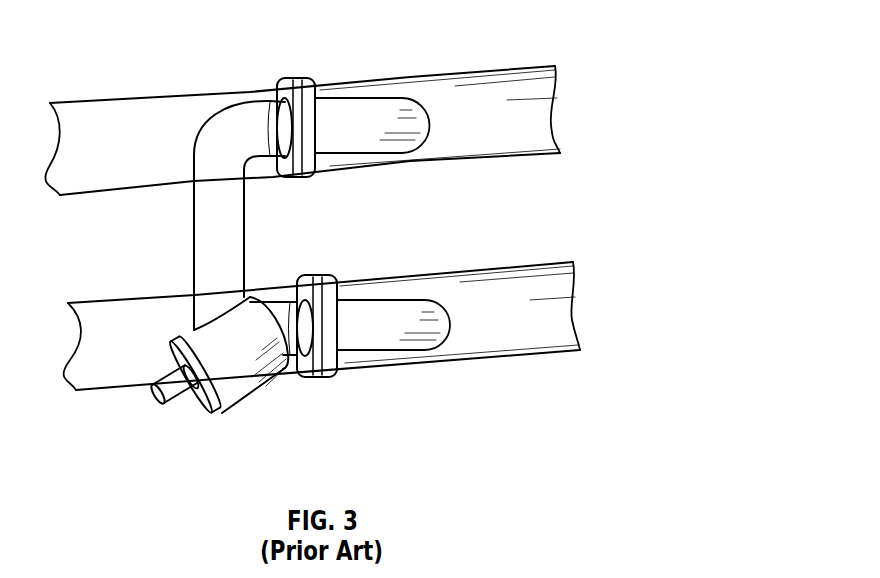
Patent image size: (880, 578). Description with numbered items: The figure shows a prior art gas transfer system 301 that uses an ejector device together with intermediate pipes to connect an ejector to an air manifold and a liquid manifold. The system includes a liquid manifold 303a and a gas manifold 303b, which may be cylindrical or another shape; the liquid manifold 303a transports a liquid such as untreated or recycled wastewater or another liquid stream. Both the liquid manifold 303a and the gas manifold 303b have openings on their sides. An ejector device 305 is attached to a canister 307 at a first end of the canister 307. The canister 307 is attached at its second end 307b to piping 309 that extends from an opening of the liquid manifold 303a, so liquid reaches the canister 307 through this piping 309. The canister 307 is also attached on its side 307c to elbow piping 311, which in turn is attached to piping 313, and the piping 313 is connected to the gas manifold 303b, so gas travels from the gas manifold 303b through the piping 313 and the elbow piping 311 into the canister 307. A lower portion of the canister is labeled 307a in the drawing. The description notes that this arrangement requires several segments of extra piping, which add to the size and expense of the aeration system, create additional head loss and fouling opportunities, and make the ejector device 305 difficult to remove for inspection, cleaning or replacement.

The gas transfer system 301 is at (276, 55).
The liquid manifold 303a is at (480, 347).
The gas manifold 303b is at (443, 76).
The ejector device 305 is at (157, 383).
The canister 307 is at (234, 398).
The lower portion of fitting 307a is at (222, 410).
The second end of canister 307b is at (298, 276).
The side of canister 307c is at (229, 311).
The piping 309 is at (352, 337).
The elbow piping 311 is at (193, 228).
The piping 313 is at (335, 138).